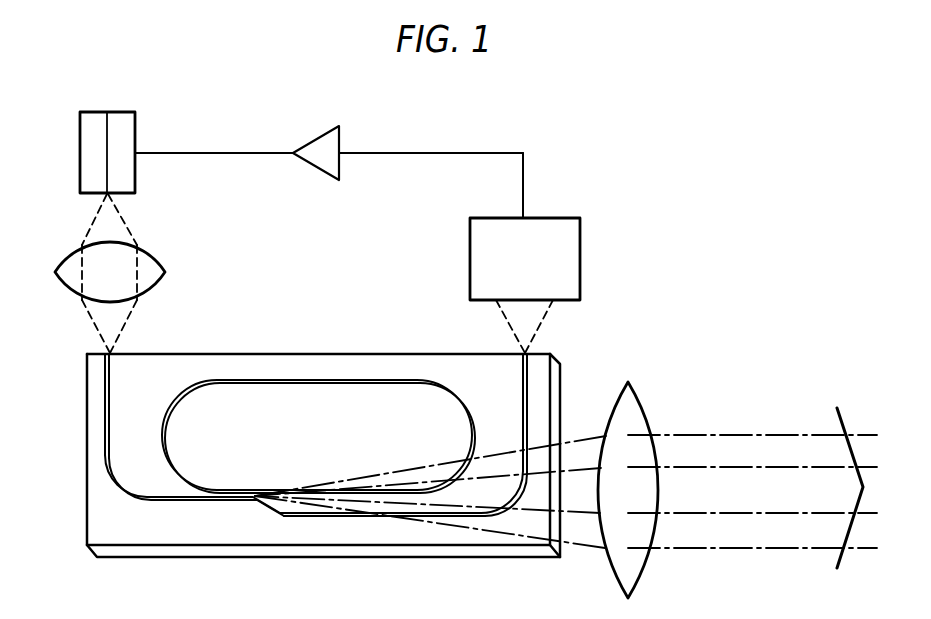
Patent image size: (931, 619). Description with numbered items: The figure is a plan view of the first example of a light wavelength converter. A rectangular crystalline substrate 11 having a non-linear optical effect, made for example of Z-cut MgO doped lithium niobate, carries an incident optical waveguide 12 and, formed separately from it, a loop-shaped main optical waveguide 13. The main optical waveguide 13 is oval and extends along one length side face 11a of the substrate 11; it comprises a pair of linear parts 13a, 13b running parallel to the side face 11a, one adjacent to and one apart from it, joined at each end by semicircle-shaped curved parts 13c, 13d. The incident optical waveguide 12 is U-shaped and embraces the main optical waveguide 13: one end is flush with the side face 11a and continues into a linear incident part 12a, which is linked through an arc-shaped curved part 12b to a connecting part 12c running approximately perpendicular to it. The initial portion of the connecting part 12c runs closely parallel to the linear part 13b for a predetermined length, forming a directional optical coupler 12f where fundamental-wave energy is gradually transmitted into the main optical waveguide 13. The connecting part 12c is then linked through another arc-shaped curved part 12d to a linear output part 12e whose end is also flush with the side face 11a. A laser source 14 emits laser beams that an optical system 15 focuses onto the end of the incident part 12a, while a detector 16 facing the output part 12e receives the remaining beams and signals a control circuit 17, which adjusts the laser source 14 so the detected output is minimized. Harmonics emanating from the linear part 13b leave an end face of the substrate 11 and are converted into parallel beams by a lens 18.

The crystalline substrate 11 is at (297, 430).
The length side face 11a is at (400, 354).
The incident optical waveguide 12 is at (310, 477).
The incident part 12a is at (106, 386).
The curved part 12b is at (117, 484).
The connecting part 12c is at (321, 517).
The curved part 12d is at (528, 497).
The output part 12e is at (534, 393).
The directional optical coupler 12f is at (233, 496).
The loop-shaped main optical waveguide 13 is at (319, 401).
The linear part 13a is at (340, 380).
The linear part 13b is at (335, 490).
The curved part 13c is at (210, 385).
The curved part 13d is at (440, 381).
The laser source 14 is at (80, 128).
The optical system 15 is at (57, 273).
The detector 16 is at (575, 228).
The control circuit 17 is at (334, 138).
The lens 18 is at (640, 407).